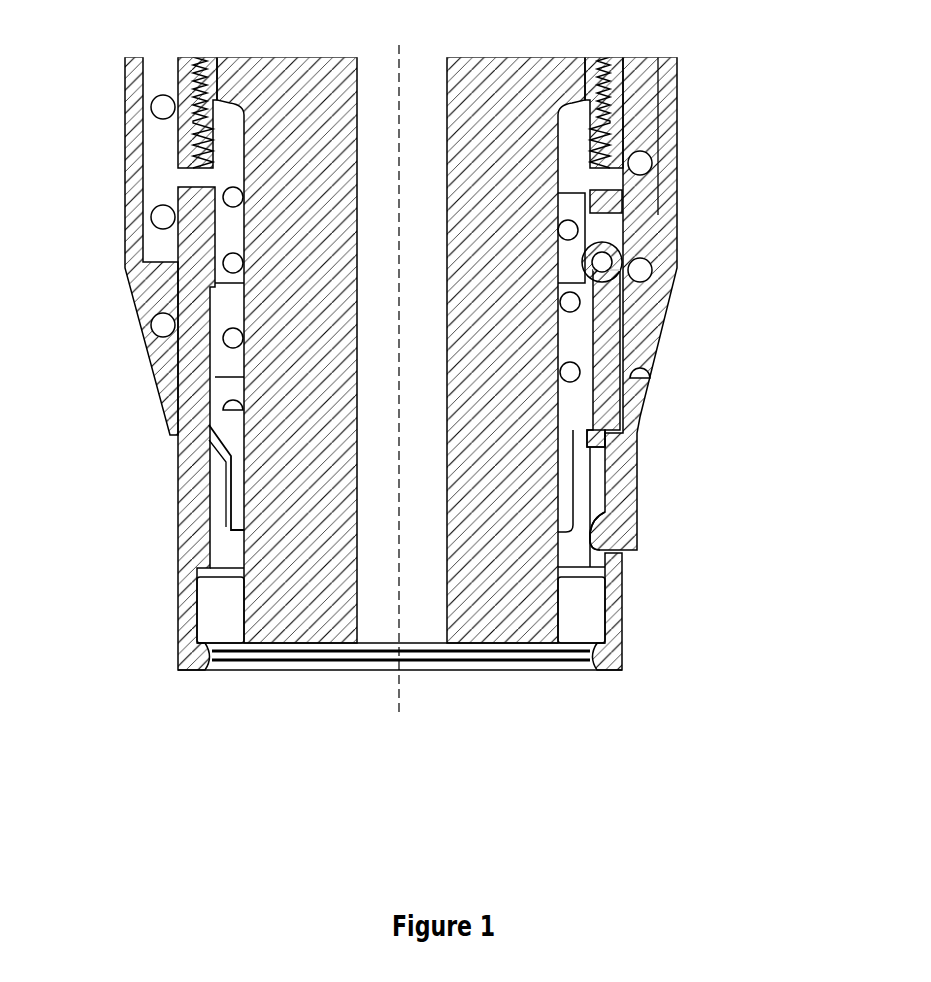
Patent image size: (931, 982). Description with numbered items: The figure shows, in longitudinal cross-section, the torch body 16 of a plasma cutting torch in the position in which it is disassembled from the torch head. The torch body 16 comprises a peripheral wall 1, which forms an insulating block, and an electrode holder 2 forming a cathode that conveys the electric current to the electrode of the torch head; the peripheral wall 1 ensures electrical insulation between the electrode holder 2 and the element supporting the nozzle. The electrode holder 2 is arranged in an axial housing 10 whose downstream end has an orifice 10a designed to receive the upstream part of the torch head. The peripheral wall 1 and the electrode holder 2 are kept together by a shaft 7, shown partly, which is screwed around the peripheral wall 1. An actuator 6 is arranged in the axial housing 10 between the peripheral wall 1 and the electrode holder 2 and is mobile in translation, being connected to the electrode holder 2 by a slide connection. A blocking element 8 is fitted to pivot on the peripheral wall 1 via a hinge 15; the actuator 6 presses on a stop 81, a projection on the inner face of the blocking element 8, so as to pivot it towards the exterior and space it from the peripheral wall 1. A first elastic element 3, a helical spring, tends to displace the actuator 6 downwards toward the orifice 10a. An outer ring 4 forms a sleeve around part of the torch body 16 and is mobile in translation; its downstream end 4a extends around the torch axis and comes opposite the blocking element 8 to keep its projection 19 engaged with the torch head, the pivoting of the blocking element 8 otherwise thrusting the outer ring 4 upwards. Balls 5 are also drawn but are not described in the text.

The peripheral wall 1 is at (195, 463).
The electrode holder 2 is at (263, 608).
The first elastic element 3 is at (585, 218).
The outer ring 4 is at (135, 252).
The downstream end 4a is at (637, 420).
The locking ball 5 is at (163, 218).
The actuator 6 is at (570, 408).
The shaft 7 is at (185, 76).
The blocking element 8 is at (612, 348).
The axial housing 10 is at (222, 473).
The orifice 10a is at (223, 542).
The hinge 15 is at (600, 263).
The torch body 16 is at (696, 103).
The projection 19 is at (597, 533).
The stop 81 is at (592, 435).